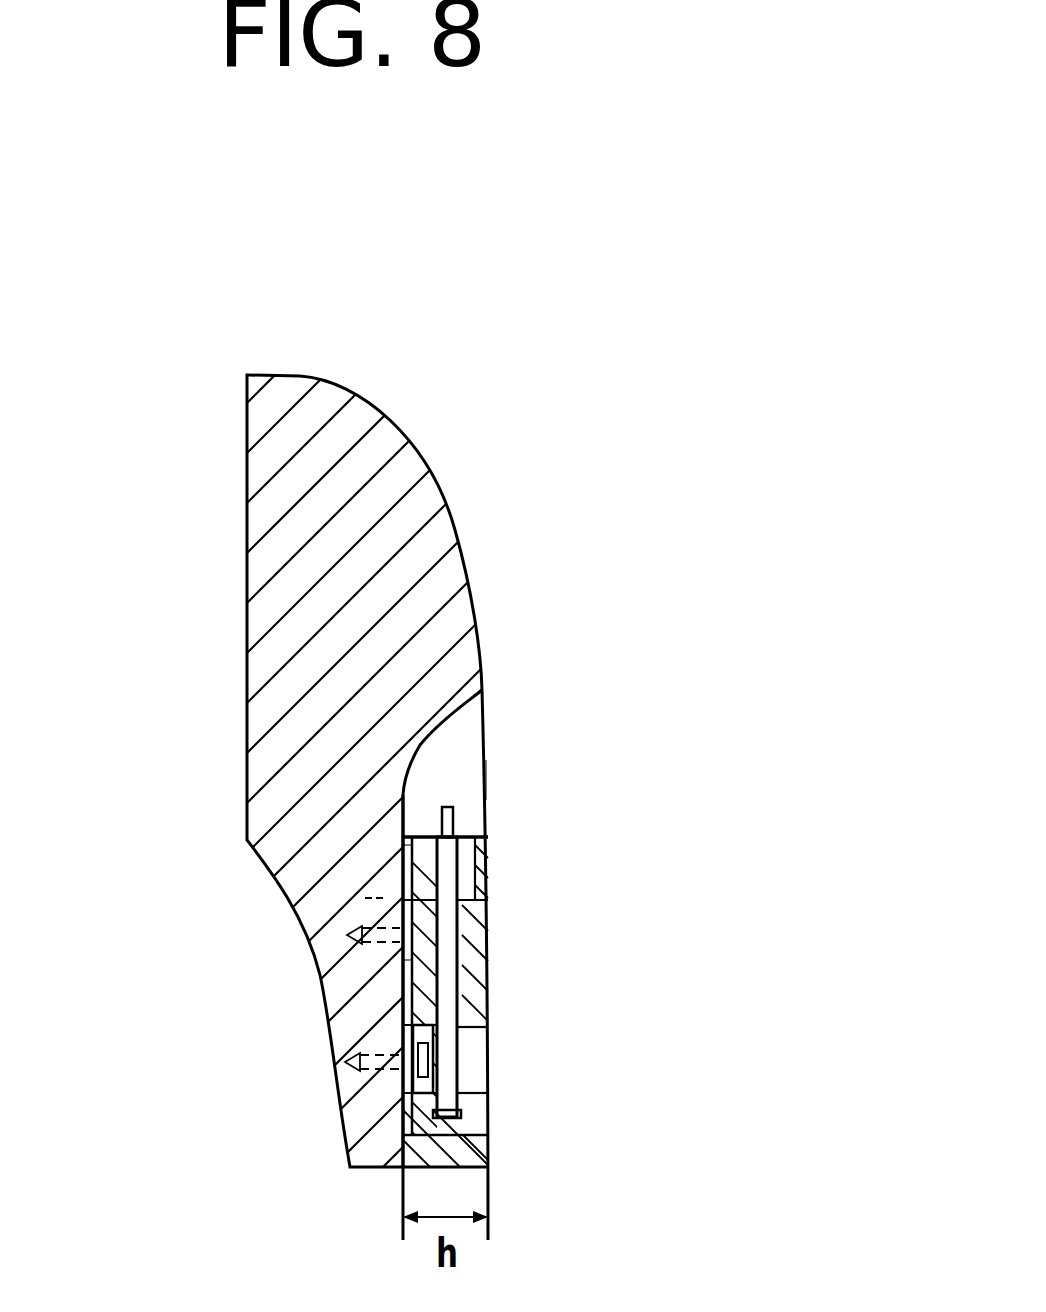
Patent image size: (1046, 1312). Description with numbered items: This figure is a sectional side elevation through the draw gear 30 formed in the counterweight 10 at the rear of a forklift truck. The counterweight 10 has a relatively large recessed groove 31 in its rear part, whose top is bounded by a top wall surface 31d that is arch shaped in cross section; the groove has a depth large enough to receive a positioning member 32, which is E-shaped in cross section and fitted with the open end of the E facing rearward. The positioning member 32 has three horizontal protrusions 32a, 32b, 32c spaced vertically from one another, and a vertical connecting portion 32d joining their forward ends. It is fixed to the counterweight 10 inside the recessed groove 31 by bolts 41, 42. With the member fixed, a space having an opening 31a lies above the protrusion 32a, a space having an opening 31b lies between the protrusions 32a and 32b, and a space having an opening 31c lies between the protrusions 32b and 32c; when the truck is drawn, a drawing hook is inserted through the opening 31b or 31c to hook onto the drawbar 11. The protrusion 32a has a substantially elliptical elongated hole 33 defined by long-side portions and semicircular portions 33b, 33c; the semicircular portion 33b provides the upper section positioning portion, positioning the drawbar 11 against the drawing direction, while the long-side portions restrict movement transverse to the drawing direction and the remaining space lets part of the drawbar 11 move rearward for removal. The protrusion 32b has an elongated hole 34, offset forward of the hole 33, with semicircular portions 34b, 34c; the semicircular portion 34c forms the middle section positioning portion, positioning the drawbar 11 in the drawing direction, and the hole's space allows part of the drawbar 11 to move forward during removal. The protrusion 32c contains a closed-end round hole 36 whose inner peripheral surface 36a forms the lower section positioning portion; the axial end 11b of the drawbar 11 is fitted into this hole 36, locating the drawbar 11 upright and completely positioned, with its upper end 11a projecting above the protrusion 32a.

The counterweight 10 is at (372, 413).
The drawbar 11 is at (486, 927).
The rod upper end 11a is at (440, 806).
The axial end 11b is at (440, 1165).
The draw gear 30 is at (676, 716).
The recessed groove 31 is at (486, 745).
The opening 31a is at (486, 783).
The opening 31b is at (486, 940).
The opening 31c is at (486, 1068).
The top wall surface 31d is at (480, 707).
The positioning member 32 is at (395, 891).
The protrusion 32a is at (486, 903).
The protrusion 32b is at (486, 985).
The protrusion 32c is at (486, 1122).
The vertical connecting portion 32d is at (400, 965).
The elongated hole 33 is at (486, 822).
The semicircular portion 33b is at (405, 858).
The semicircular portion 33c is at (486, 866).
The elongated hole 34 is at (413, 1040).
The semicircular portion 34b is at (418, 1050).
The semicircular portion 34c is at (486, 1025).
The closed-end round hole 36 is at (486, 1160).
The inner peripheral surface 36a is at (486, 1118).
The bolt 41 is at (400, 977).
The bolt 42 is at (403, 1135).